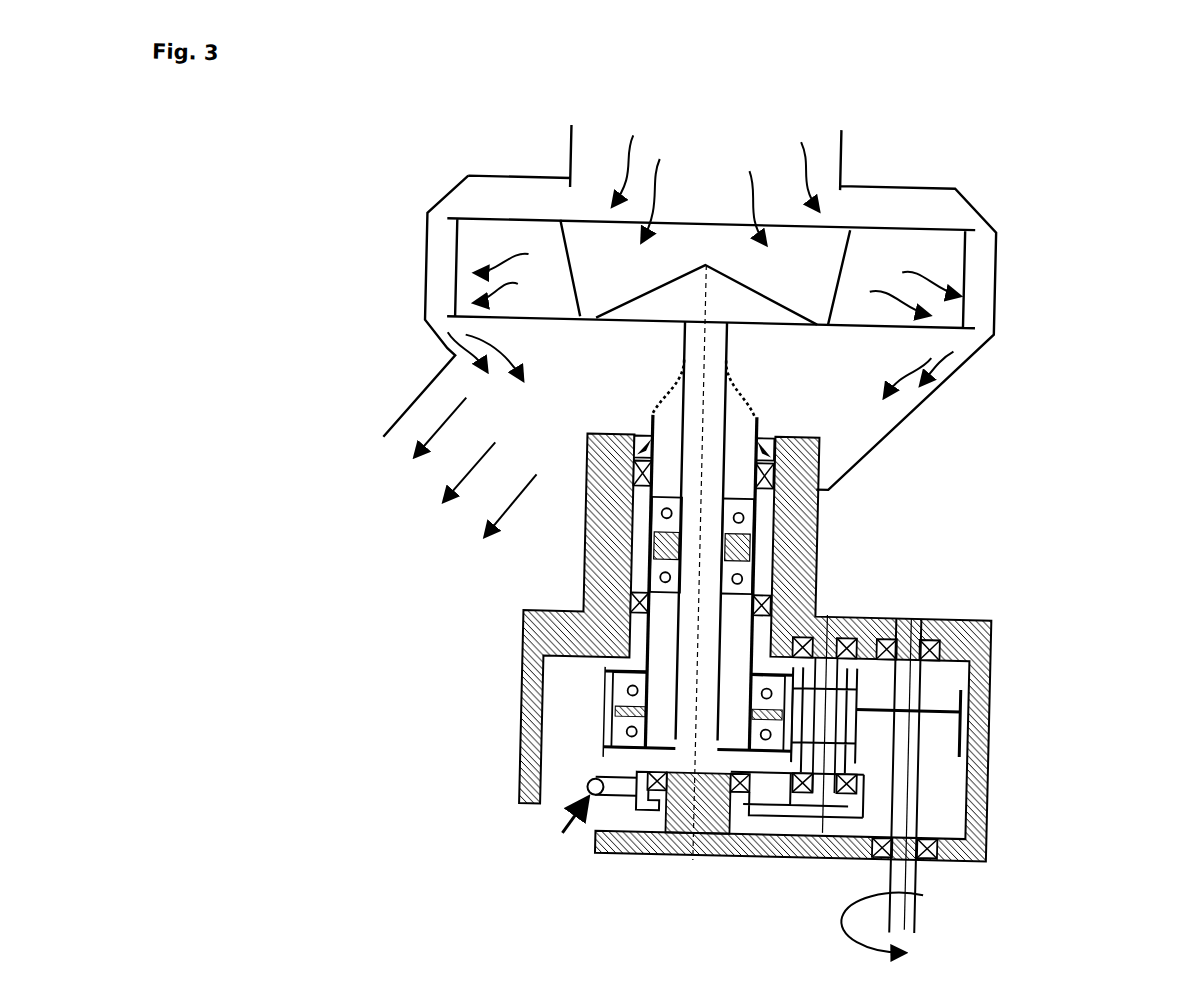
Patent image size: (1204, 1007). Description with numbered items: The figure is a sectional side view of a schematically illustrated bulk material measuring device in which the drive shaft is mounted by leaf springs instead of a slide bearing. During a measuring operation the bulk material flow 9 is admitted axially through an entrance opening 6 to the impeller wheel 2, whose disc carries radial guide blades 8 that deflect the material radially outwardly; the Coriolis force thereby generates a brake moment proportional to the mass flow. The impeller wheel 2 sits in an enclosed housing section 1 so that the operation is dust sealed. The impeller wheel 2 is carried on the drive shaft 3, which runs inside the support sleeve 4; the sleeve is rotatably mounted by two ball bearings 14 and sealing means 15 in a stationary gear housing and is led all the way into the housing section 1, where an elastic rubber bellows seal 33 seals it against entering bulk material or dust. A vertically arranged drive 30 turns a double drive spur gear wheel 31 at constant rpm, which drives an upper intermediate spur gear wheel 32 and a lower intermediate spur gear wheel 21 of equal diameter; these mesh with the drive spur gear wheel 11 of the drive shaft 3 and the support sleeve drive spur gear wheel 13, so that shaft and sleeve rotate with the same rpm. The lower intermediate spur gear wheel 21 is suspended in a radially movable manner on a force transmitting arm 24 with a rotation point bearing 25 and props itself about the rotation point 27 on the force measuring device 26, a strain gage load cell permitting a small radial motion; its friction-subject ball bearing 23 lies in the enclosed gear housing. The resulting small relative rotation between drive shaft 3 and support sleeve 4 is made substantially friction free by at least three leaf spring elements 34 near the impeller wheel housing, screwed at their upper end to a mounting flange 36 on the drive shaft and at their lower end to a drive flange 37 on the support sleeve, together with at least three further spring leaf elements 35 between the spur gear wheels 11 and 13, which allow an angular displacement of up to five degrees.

The enclosed housing section 1 is at (420, 262).
The impeller wheel 2 is at (472, 223).
The drive shaft 3 is at (691, 540).
The support sleeve 4 is at (650, 499).
The entrance opening 6 is at (528, 627).
The radial guide blades 8 is at (927, 247).
The bulk material flow 9 is at (648, 182).
The drive spur gear wheel 11 is at (613, 749).
The support sleeve drive spur gear wheel 13 is at (610, 674).
The ball bearings 14 is at (775, 468).
The sealing means 15 is at (816, 434).
The lower intermediate spur gear wheel 21 is at (852, 730).
The ball bearing 23 is at (847, 790).
The force transmitting arm 24 is at (779, 790).
The rotation point bearing 25 is at (655, 791).
The force measuring device 26 is at (597, 790).
The rotation point 27 is at (705, 850).
The drive 30 is at (919, 875).
The double drive spur gear wheel 31 is at (964, 684).
The upper intermediate spur gear wheel 32 is at (864, 673).
The rubber bellows seal 33 is at (730, 381).
The leaf spring elements 34 is at (758, 537).
The further spring leaf elements 35 is at (612, 712).
The mounting flange 36 is at (757, 507).
The drive flange 37 is at (759, 571).